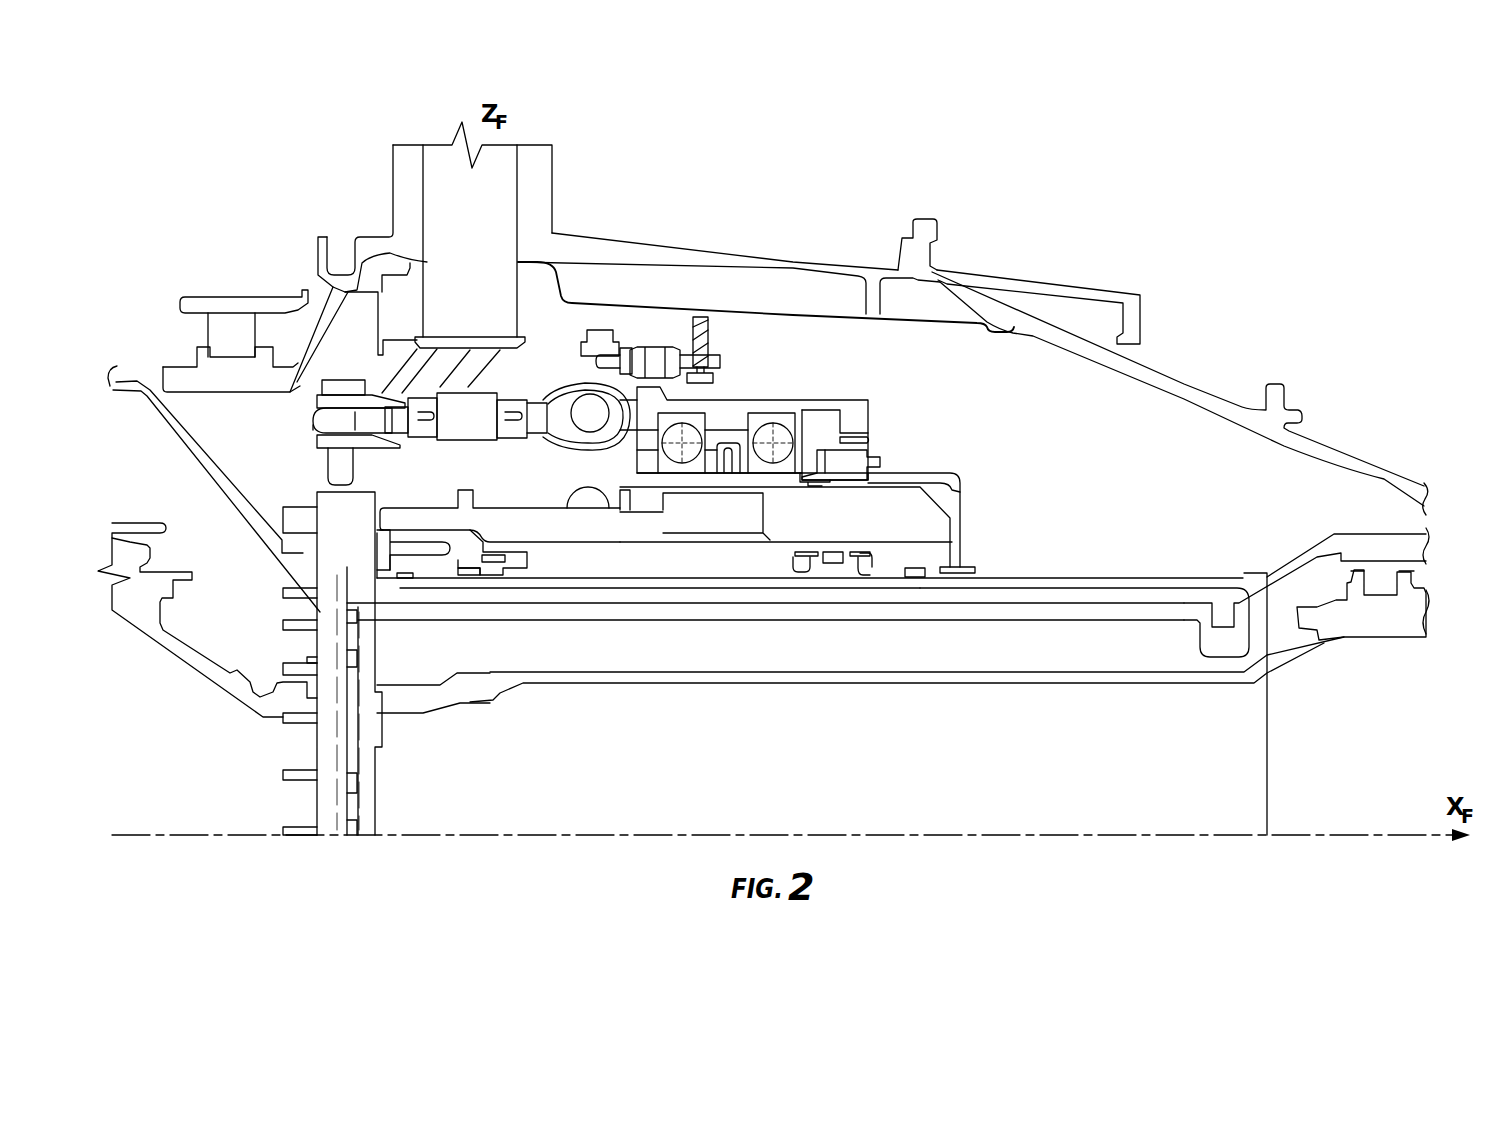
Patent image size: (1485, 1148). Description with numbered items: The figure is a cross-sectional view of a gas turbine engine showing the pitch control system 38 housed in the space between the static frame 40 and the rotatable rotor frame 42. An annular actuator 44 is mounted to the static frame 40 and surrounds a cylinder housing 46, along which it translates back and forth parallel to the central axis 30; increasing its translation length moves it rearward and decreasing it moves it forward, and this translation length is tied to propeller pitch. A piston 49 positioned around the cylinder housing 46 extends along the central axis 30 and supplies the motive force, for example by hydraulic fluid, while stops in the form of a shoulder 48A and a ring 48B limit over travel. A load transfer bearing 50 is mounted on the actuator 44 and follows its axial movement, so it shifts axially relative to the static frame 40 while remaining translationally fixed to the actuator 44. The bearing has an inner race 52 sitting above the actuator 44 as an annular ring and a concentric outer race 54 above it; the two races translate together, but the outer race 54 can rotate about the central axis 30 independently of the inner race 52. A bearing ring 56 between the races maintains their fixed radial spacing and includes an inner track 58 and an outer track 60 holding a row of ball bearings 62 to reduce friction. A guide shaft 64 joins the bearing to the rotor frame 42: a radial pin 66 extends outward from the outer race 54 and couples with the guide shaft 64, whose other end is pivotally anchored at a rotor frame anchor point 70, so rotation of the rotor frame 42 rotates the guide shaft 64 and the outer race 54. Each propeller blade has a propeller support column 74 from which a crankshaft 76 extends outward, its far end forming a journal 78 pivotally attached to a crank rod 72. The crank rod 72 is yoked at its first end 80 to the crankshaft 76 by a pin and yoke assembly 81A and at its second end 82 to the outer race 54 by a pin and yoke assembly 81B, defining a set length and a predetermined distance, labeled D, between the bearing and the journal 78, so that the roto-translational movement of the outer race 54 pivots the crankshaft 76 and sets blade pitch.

The central axis 30 is at (1380, 838).
The pitch control system 38 is at (993, 353).
The static frame 40 is at (170, 440).
The rotor frame 42 is at (803, 260).
The annular actuator 44 is at (937, 557).
The cylinder housing 46 is at (1120, 577).
The shoulder 48A is at (837, 562).
The ring 48B is at (492, 567).
The piston 49 is at (620, 520).
The load transfer bearing 50 is at (942, 422).
The inner race 52 is at (935, 472).
The outer race 54 is at (870, 410).
The bearing ring 56 is at (822, 484).
The inner track 58 is at (795, 467).
The outer track 60 is at (790, 420).
The ball bearings 62 is at (766, 425).
The guide shaft 64 is at (657, 347).
The radial pin 66 is at (597, 330).
The rotor frame anchor point 70 is at (710, 330).
The crank rod 72 is at (488, 440).
The propeller support column 74 is at (423, 172).
The crankshaft 76 is at (390, 382).
The journal 78 is at (317, 402).
The first end 80 is at (313, 425).
The pin and yoke assembly 81A is at (380, 458).
The pin and yoke assembly 81B is at (572, 462).
The second end 82 is at (578, 385).
The distance D is at (289, 450).